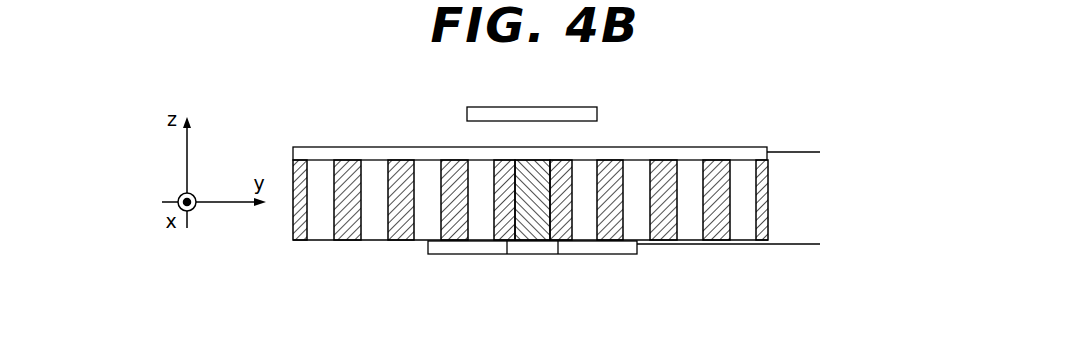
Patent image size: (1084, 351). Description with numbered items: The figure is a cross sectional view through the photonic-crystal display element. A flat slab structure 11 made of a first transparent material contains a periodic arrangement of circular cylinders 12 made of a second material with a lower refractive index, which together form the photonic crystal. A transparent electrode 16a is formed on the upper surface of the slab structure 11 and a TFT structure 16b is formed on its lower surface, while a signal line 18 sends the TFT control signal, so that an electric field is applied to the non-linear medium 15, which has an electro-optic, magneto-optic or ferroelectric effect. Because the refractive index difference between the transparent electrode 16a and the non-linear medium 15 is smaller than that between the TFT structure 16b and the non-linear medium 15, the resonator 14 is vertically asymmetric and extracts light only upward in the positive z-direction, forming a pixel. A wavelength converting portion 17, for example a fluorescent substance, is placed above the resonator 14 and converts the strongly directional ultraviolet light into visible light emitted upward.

The slab structure 11 is at (341, 162).
The circular cylinders 12 is at (374, 217).
The resonator 14 is at (565, 176).
The non-linear medium 15 is at (572, 213).
The transparent electrode 16a is at (717, 145).
The TFT structure 16b is at (585, 255).
The wavelength converting portion 17 is at (468, 109).
The signal line 18 is at (790, 245).